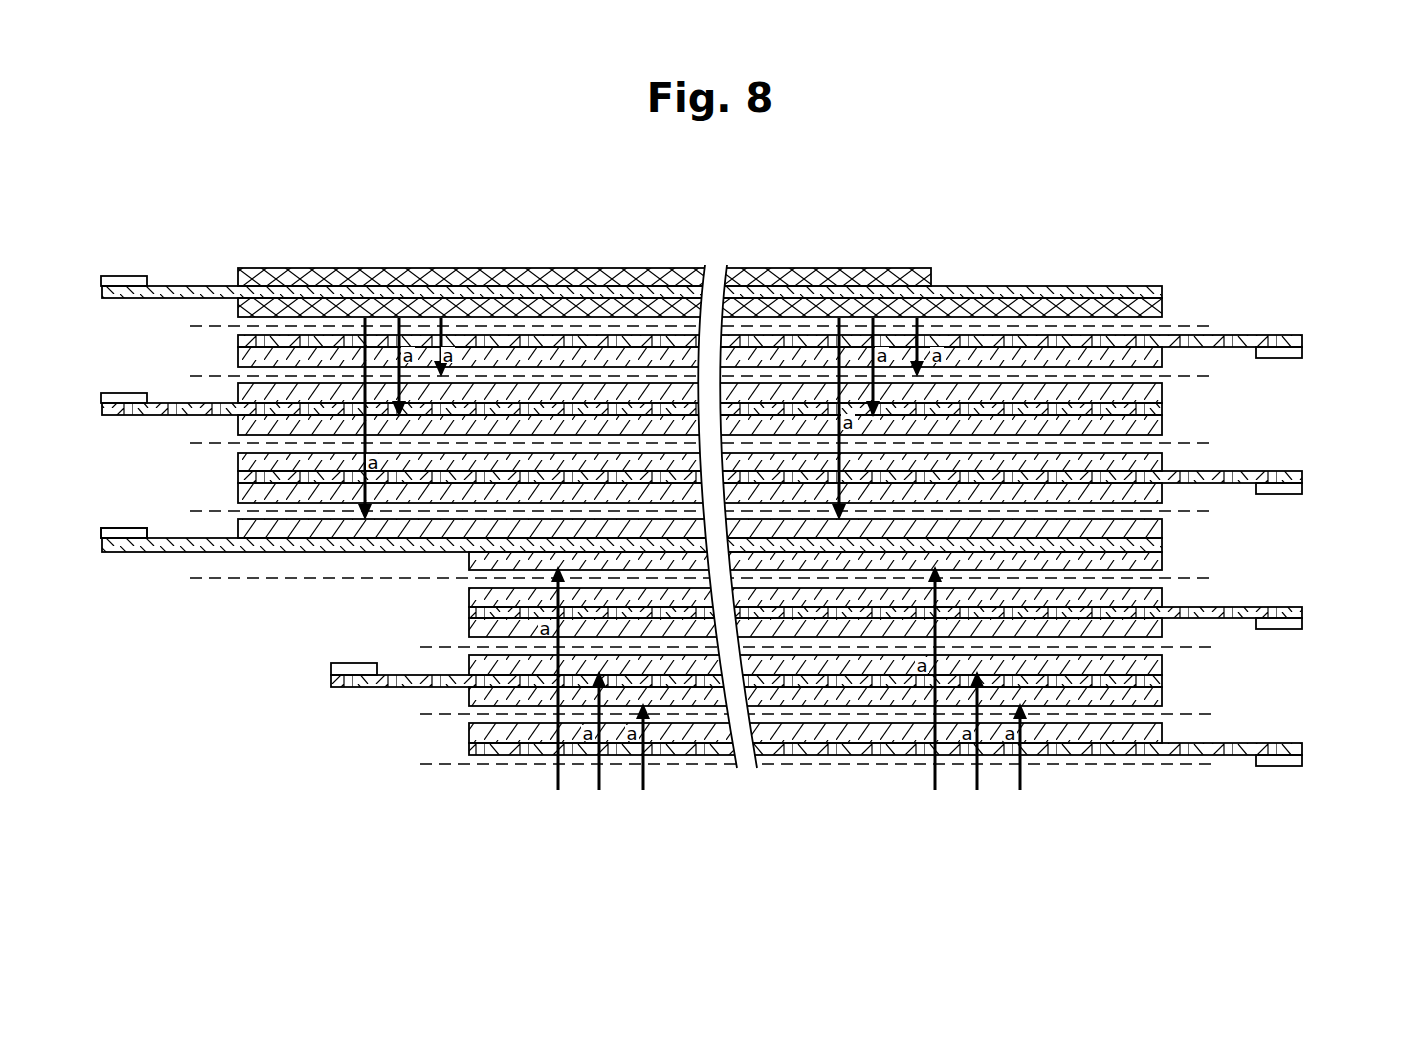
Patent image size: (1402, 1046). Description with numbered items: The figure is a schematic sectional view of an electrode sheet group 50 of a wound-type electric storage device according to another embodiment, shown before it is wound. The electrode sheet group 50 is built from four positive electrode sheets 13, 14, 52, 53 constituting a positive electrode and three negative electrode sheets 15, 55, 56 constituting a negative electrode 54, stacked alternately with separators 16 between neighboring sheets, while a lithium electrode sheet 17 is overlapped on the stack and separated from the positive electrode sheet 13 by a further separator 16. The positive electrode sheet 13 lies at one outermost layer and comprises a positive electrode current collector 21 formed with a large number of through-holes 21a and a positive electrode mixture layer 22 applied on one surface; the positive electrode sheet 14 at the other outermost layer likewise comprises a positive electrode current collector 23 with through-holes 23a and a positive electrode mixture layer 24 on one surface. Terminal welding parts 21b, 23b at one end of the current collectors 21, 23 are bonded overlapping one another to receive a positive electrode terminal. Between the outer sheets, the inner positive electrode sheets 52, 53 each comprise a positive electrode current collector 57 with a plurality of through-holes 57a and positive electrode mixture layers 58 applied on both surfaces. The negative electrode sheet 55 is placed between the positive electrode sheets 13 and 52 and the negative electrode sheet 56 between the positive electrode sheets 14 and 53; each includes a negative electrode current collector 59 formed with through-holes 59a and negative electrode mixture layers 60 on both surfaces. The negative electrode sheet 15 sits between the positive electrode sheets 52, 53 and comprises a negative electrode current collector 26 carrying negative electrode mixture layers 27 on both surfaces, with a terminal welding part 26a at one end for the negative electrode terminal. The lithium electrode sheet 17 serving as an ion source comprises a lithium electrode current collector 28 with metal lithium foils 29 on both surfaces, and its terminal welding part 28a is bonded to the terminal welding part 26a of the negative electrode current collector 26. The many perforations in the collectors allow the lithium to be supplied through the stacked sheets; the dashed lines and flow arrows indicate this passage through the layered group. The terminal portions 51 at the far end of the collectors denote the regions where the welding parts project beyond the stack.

The electrode sheet group 50 is at (244, 754).
The electrode terminal portion 51 is at (1280, 325).
The positive electrode sheet 13 is at (112, 315).
The positive electrode sheet 14 is at (362, 712).
The negative electrode sheet 15 is at (1255, 505).
The separator 16 is at (230, 378).
The lithium electrode sheet 17 is at (905, 224).
The positive electrode current collector 21 is at (238, 342).
The through-hole 21a is at (605, 340).
The terminal welding part 21b is at (1303, 352).
The positive electrode mixture layer 22 is at (238, 359).
The positive electrode current collector 23 is at (480, 750).
The through-hole 23a is at (660, 756).
The terminal welding part 23b is at (1303, 760).
The positive electrode mixture layer 24 is at (480, 731).
The negative electrode current collector 26 is at (1170, 545).
The terminal welding part 26a is at (120, 533).
The negative electrode mixture layer 27 is at (1170, 529).
The lithium electrode current collector 28 is at (948, 292).
The terminal welding part 28a is at (120, 283).
The metal lithium foil 29 is at (921, 278).
The positive electrode sheet 52 is at (125, 435).
The positive electrode sheet 53 is at (352, 585).
The negative electrode 54 is at (104, 430).
The negative electrode sheet 55 is at (1255, 372).
The negative electrode sheet 56 is at (1275, 643).
The positive electrode current collector 57 is at (250, 477).
The through-hole 57a is at (307, 475).
The positive electrode mixture layer 58 is at (250, 463).
The negative electrode current collector 59 is at (1170, 410).
The through-hole 59a is at (516, 410).
The negative electrode mixture layer 60 is at (1170, 396).